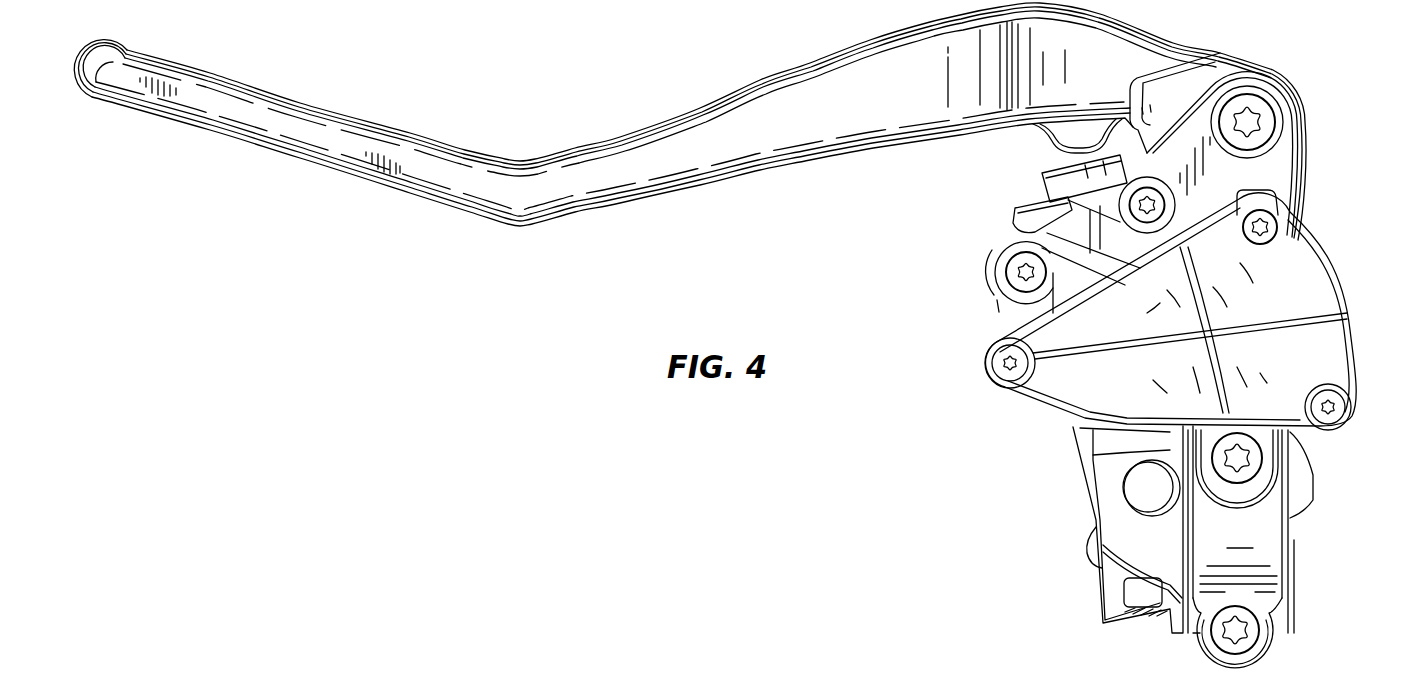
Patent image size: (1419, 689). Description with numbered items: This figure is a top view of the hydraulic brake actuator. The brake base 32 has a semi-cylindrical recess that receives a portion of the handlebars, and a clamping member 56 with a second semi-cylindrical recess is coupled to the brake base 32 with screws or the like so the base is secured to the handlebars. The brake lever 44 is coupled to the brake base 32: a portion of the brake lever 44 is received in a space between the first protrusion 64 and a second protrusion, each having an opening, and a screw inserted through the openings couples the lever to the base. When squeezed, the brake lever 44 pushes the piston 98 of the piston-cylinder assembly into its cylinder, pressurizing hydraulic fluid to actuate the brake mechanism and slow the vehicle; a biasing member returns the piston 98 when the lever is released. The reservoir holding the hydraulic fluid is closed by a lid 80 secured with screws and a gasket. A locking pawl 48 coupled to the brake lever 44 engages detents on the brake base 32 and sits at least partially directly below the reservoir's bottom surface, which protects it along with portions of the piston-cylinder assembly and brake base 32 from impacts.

The brake lever 44 is at (755, 122).
The piston 98 is at (1040, 152).
The first protrusion 64 is at (1283, 135).
The lid 80 is at (1287, 280).
The locking pawl 48 is at (1340, 277).
The brake base 32 is at (1132, 528).
The clamping member 56 is at (1253, 527).